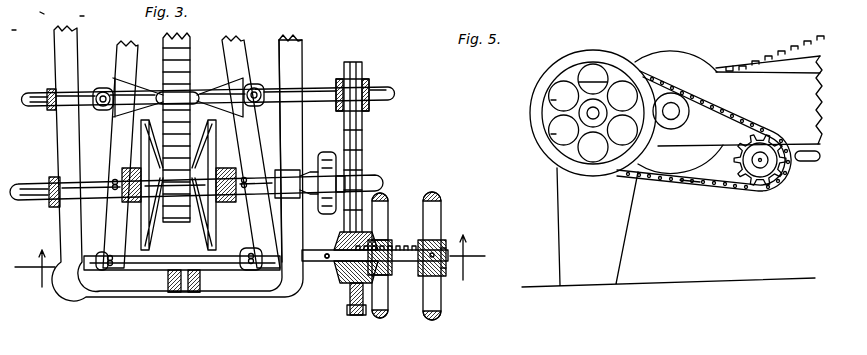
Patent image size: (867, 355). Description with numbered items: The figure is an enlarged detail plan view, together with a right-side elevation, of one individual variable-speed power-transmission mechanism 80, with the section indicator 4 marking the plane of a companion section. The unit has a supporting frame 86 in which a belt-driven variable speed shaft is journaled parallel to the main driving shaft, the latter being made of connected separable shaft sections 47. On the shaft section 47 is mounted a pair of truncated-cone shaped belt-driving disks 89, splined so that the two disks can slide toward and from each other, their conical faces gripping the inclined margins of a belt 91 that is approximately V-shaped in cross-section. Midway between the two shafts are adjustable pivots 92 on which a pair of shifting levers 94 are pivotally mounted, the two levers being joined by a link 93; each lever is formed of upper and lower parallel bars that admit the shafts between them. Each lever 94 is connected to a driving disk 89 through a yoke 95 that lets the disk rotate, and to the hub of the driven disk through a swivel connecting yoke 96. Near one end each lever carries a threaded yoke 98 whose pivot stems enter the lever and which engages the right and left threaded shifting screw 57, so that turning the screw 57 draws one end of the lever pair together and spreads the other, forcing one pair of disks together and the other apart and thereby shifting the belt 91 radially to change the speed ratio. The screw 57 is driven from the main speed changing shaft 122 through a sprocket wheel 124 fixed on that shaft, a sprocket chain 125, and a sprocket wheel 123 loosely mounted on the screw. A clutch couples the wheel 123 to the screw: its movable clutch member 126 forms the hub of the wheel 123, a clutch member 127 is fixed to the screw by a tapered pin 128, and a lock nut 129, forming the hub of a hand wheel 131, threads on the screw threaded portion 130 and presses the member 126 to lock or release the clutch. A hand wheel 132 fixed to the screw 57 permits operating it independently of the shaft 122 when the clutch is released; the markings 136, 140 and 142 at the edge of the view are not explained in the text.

In FIG. 3, the section line 4- 4 is at (253, 261).
In FIG. 3, the separable shaft section 47 is at (82, 160).
In FIG. 3, the shifting screw 57 is at (173, 263).
In FIG. 5, the shifting screw 57 is at (585, 113).
In FIG. 3, the variable-speed power-transmission mechanism 80 is at (187, 283).
In FIG. 3, the supporting frame 86 is at (300, 70).
In FIG. 5, the supporting frame 86 is at (722, 83).
In FIG. 3, the belt-driving disk 89 is at (118, 178).
In FIG. 5, the belt-driving disk 89 is at (684, 56).
In FIG. 3, the belt 91 is at (190, 53).
In FIG. 5, the belt 91 is at (778, 60).
In FIG. 3, the adjustable pivot 92 is at (103, 90).
In FIG. 3, the link 93 is at (140, 58).
In FIG. 3, the shifting lever 94 is at (120, 128).
In FIG. 3, the yoke 95 is at (105, 198).
In FIG. 3, the connecting yoke 96 is at (56, 210).
In FIG. 3, the threaded yoke 98 is at (97, 273).
In FIG. 3, the main speed changing shaft 122 is at (375, 92).
In FIG. 5, the main speed changing shaft 122 is at (760, 165).
In FIG. 3, the sprocket wheel 123 is at (356, 308).
In FIG. 3, the sprocket wheel 124 is at (368, 110).
In FIG. 5, the sprocket wheel 124 is at (777, 183).
In FIG. 3, the sprocket chain 125 is at (365, 137).
In FIG. 5, the sprocket chain 125 is at (687, 185).
In FIG. 3, the movable clutch member 126 is at (372, 232).
In FIG. 3, the clutch member 127 is at (334, 265).
In FIG. 3, the tapered pin 128 is at (320, 262).
In FIG. 3, the lock nut 129 is at (390, 283).
In FIG. 3, the screw threaded portion 130 is at (402, 248).
In FIG. 3, the hand wheel 131 is at (383, 318).
In FIG. 3, the hand wheel 132 is at (442, 232).
In FIG. 5, the hand wheel 132 is at (588, 52).
In FIG. 3, the member 136 is at (81, 8).
In FIG. 3, the member 140 is at (8, 2).
In FIG. 3, the member 142 is at (23, 21).